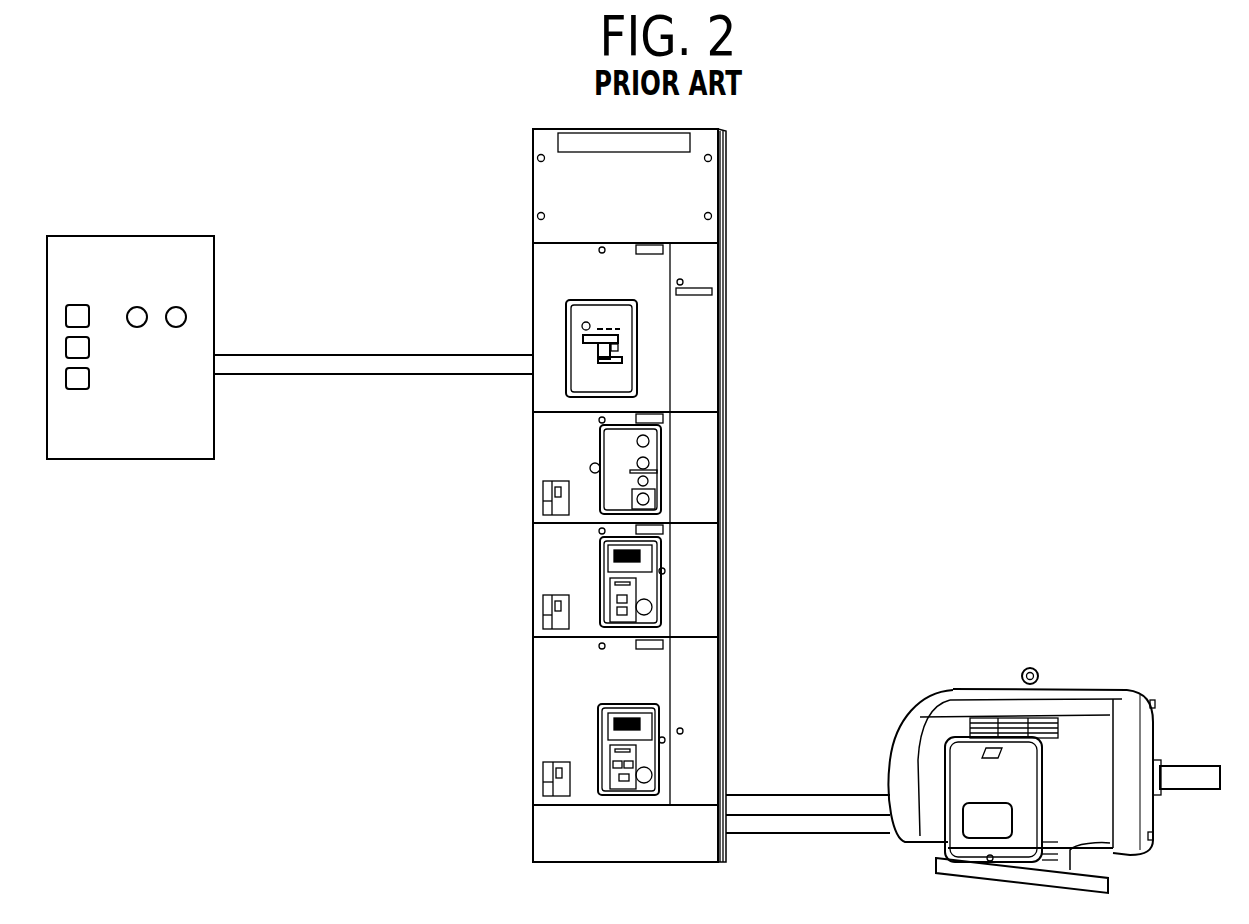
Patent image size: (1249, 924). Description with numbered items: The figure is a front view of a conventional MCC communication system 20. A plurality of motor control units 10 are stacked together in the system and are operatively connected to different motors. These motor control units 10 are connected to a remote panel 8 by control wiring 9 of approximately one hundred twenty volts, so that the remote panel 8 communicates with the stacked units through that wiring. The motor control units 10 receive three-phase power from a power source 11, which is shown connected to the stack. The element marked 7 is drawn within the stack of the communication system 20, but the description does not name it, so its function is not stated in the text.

The conventional MCC communication system 20 is at (798, 122).
The circuit breaker 7 is at (566, 320).
The remote panel 8 is at (129, 236).
The control wiring 9 is at (357, 355).
The motor control units 10 is at (533, 464).
The power source 11 is at (1079, 686).